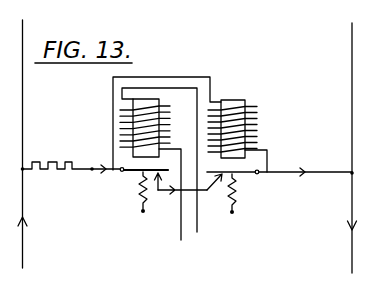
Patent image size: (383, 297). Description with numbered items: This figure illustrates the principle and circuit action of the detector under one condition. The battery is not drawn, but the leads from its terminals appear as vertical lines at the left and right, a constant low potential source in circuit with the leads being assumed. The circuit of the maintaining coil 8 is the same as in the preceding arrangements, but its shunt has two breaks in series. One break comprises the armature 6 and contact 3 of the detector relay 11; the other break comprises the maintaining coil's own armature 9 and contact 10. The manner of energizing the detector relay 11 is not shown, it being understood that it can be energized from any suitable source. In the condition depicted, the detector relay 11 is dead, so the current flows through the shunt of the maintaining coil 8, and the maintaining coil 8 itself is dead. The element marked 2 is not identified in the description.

The pulse signal input 2 is at (58, 155).
The contact 3 is at (181, 193).
The armature 6 is at (134, 192).
The maintaining coil 8 is at (240, 129).
The armature 9 is at (240, 194).
The contact 10 is at (210, 195).
The detector relay 11 is at (156, 128).